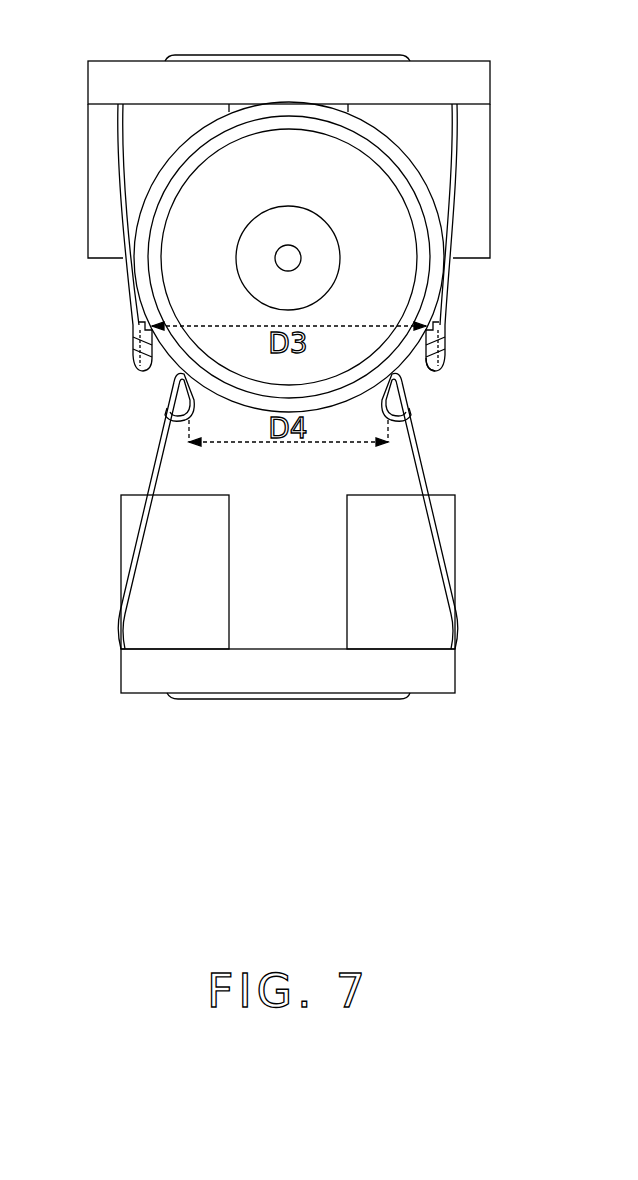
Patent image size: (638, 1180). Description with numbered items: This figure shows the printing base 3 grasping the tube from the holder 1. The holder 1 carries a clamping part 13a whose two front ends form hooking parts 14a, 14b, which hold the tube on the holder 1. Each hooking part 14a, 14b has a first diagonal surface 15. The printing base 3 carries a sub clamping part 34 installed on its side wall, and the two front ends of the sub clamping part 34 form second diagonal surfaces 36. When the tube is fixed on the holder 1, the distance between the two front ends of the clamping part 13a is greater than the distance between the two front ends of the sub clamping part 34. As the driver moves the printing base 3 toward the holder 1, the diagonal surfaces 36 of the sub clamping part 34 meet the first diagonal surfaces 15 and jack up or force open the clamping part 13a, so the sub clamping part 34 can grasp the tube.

The holder 1 is at (428, 80).
The printing base 3 is at (447, 677).
The clamping part 13a is at (448, 272).
The hooking part 14a is at (447, 344).
The hooking part 14b is at (133, 347).
The first diagonal surface 15 is at (421, 368).
The sub clamping part 34 is at (422, 465).
The second diagonal surface 36 is at (410, 410).